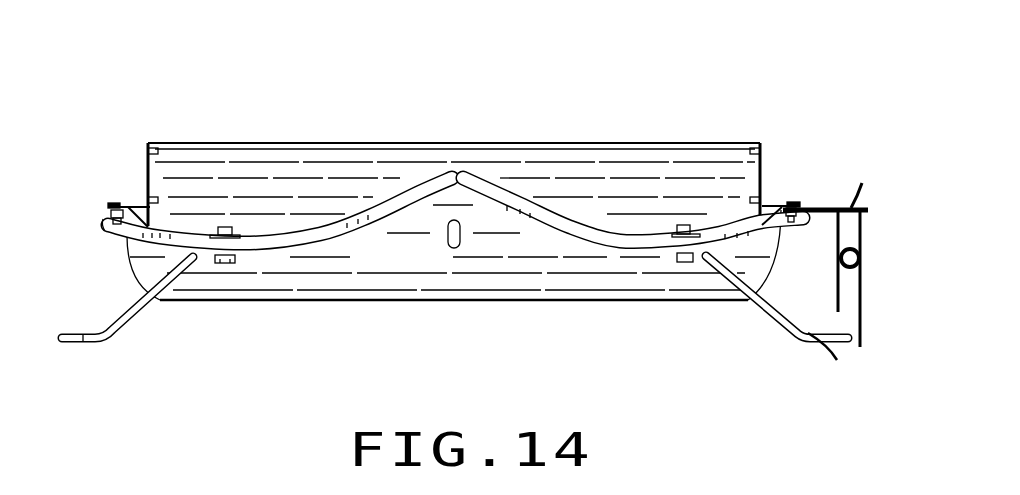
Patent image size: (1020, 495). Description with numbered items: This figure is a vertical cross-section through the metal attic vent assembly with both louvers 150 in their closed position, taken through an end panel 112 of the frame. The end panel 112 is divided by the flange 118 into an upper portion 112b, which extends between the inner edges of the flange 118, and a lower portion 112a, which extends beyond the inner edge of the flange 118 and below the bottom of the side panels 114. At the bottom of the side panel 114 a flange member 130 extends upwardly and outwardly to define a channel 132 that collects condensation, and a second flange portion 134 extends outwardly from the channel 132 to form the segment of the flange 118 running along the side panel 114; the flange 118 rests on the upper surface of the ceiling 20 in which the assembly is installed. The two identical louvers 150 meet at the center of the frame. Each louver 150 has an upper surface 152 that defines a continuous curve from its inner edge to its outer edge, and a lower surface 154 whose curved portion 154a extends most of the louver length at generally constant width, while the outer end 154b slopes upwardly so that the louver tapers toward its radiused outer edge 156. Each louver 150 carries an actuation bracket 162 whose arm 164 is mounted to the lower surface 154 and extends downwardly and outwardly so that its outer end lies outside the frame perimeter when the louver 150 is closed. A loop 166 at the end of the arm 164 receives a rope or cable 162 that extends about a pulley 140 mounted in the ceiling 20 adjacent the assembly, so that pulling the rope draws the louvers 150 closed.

The ceiling 20 is at (869, 188).
The end panel 112 is at (454, 216).
The lower portion of end panel 112a is at (560, 283).
The upper portion of end panel 112b is at (650, 177).
The side panel 114 is at (763, 160).
The flange 118 is at (787, 202).
The flange member 130 is at (781, 230).
The channel 132 is at (150, 206).
The second flange portion 134 is at (123, 205).
The pulley 140 is at (834, 254).
The louver 150 is at (297, 230).
The upper surface of louver 152 is at (340, 226).
The lower surface of louver 154 is at (438, 220).
The curved portion of bottom surface 154a is at (373, 229).
The outer end of bottom surface 154b is at (116, 234).
The outer edge of louver 156 is at (106, 218).
The actuation bracket 162 is at (134, 319).
The arm 164 is at (777, 323).
The loop 166 is at (834, 356).